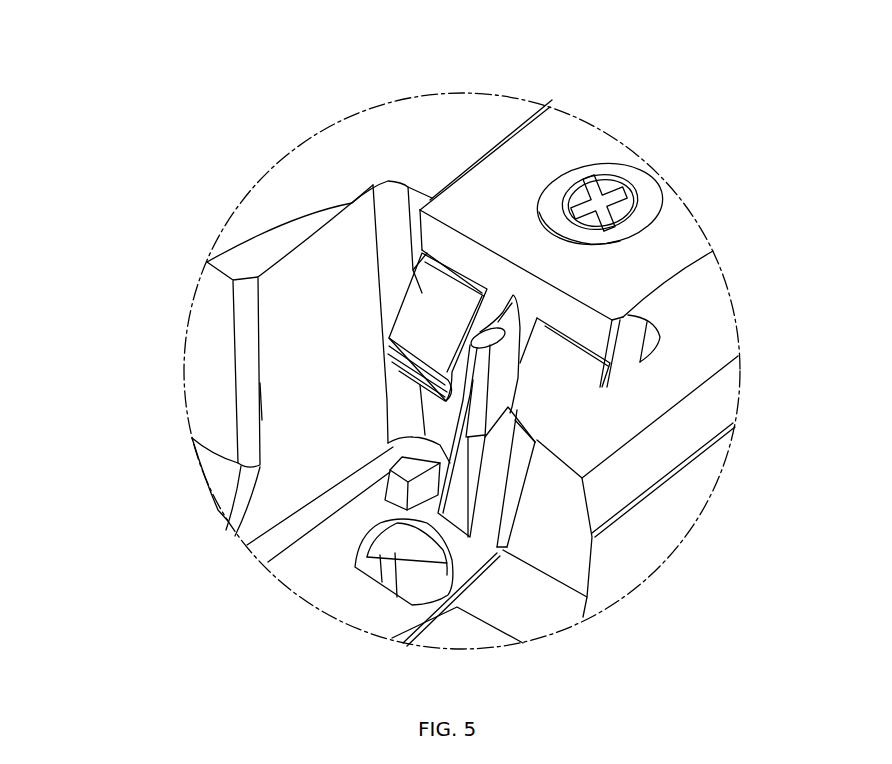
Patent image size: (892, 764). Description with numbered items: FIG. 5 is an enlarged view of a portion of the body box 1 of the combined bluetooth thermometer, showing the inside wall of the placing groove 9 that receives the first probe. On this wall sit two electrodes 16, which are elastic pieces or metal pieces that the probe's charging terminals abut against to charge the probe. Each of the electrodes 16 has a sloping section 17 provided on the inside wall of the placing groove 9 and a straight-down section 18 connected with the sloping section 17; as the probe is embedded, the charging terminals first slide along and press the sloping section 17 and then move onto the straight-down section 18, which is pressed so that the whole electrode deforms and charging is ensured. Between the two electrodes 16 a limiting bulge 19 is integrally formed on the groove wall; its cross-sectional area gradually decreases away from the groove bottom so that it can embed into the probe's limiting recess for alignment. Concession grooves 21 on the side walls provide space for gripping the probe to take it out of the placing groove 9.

The body box 1 is at (357, 128).
The placing groove 9 is at (313, 568).
The electrodes 16 is at (142, 105).
The sloping section 17 is at (432, 307).
The straight-down section 18 is at (387, 357).
The limiting bulge 19 is at (520, 387).
The concession grooves 21 is at (197, 335).